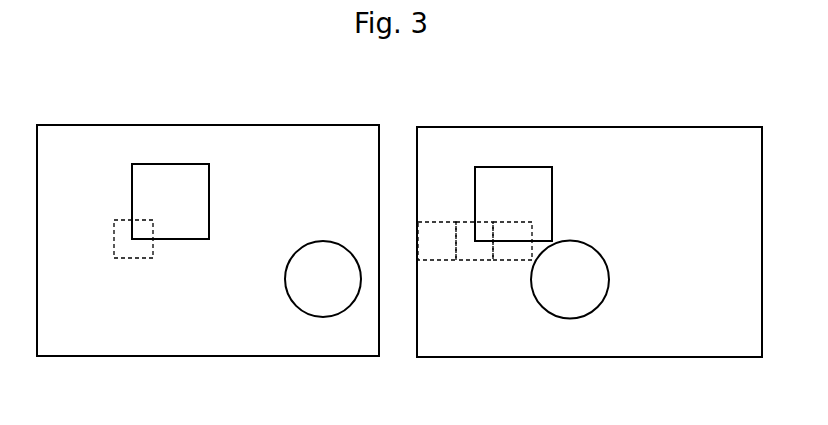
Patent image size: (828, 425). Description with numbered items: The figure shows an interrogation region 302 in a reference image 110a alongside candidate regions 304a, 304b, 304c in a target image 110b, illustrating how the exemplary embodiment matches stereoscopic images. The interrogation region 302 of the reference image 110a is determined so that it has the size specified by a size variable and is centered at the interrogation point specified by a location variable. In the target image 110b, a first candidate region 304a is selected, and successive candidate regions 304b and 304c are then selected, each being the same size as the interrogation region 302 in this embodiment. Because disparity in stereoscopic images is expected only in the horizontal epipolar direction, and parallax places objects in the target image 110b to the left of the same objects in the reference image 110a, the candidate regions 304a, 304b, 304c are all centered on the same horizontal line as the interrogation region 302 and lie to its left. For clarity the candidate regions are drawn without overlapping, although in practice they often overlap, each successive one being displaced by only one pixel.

The reference image 110a is at (286, 125).
The target image 110b is at (667, 127).
The interrogation region 302 is at (122, 258).
The first candidate region 304a is at (426, 260).
The candidate region 304b is at (475, 260).
The candidate region 304c is at (512, 260).